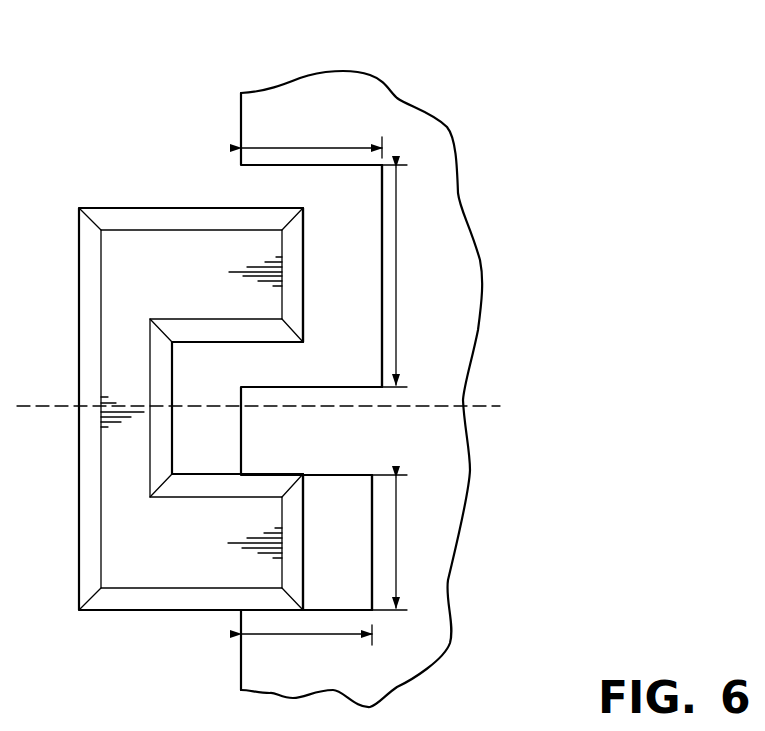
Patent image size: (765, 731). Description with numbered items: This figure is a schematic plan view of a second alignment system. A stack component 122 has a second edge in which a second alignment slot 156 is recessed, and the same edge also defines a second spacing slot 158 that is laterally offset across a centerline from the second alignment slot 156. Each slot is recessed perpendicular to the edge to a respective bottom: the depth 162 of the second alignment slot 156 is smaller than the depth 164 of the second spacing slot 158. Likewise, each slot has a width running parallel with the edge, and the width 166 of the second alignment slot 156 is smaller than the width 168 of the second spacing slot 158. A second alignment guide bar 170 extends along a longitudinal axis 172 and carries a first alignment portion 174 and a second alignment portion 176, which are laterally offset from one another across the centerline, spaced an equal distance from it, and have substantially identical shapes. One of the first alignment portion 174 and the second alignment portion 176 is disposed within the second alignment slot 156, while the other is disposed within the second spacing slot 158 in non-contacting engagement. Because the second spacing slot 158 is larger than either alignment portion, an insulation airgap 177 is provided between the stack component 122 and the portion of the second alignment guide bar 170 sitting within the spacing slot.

The stack component 122 is at (377, 100).
The second alignment slot 156 is at (370, 583).
The second spacing slot 158 is at (380, 181).
The depth of the second alignment slot 162 is at (293, 638).
The depth of the second spacing slot 164 is at (310, 147).
The width of the second alignment slot 166 is at (396, 545).
The width of the second spacing slot 168 is at (396, 266).
The second alignment guide bar 170 is at (79, 506).
The longitudinal axis 172 is at (477, 410).
The first alignment portion 174 is at (303, 237).
The second alignment portion 176 is at (303, 497).
The insulation airgap 177 is at (360, 357).